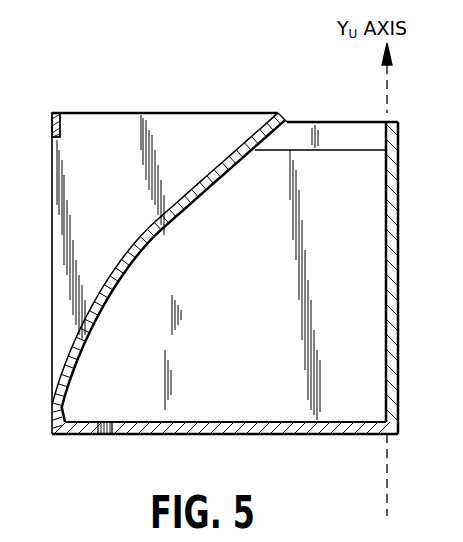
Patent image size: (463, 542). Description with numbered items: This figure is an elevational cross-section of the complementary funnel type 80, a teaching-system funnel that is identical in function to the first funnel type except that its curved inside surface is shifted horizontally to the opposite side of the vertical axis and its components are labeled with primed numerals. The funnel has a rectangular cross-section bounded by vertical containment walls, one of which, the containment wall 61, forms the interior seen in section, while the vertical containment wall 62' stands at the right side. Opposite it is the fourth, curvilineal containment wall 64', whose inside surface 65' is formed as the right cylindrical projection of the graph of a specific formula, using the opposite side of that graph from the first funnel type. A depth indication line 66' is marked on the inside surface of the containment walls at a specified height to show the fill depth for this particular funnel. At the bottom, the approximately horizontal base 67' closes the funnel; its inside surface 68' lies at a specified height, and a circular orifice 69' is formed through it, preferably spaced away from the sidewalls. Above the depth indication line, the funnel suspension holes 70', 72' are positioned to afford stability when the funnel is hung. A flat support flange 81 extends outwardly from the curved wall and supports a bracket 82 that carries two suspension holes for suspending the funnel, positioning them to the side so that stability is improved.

The vertical containment wall 61 is at (298, 272).
The vertical containment wall 62' is at (408, 278).
The curvilineal containment wall 64' is at (166, 270).
The inside surface of curvilineal containment wall 65' is at (173, 272).
The depth indication line 66' is at (320, 160).
The base 67' is at (225, 451).
The inside surface of the base 68' is at (225, 386).
The circular orifice 69' is at (122, 396).
The funnel suspension hole 70' is at (41, 111).
The funnel suspension hole 72' is at (56, 125).
The complementary funnel type 80 is at (246, 104).
The flat support flange 81 is at (152, 122).
The bracket 82 is at (52, 138).